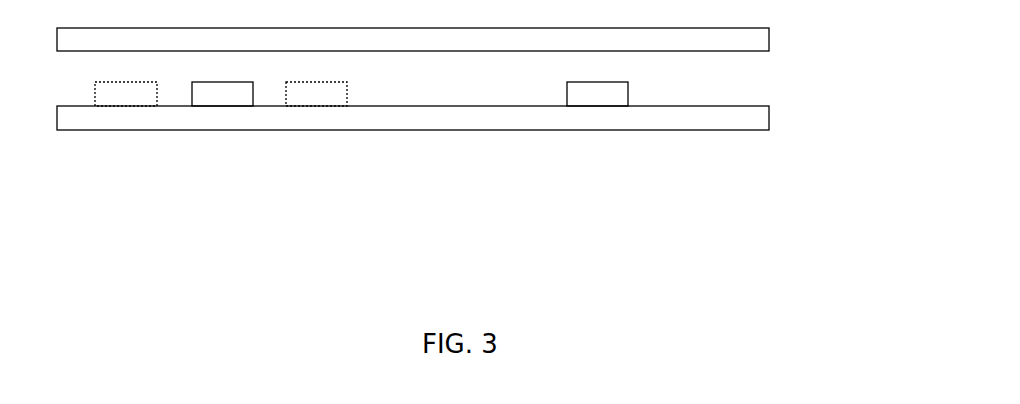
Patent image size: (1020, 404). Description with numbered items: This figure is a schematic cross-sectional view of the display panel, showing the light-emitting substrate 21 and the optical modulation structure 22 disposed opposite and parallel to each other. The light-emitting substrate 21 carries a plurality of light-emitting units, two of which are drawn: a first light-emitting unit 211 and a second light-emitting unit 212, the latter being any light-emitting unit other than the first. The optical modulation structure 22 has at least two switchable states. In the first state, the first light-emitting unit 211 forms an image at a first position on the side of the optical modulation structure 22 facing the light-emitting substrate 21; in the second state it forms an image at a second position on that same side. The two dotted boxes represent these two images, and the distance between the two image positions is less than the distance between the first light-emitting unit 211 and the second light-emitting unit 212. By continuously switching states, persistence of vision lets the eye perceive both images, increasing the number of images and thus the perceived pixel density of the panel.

The optical modulation structure 22 is at (780, 44).
The light-emitting substrate 21 is at (601, 227).
The first light-emitting unit 211 is at (226, 117).
The second light-emitting unit 212 is at (601, 117).